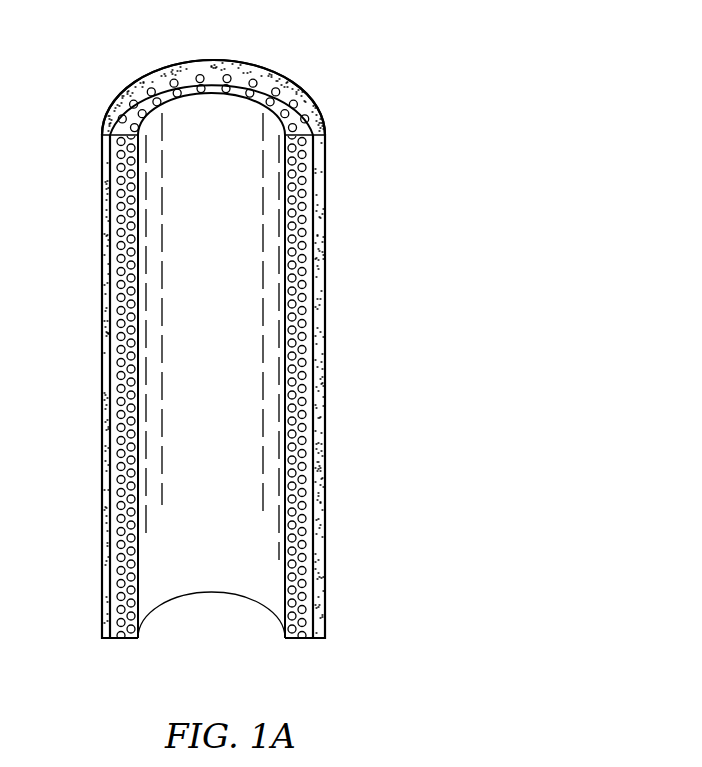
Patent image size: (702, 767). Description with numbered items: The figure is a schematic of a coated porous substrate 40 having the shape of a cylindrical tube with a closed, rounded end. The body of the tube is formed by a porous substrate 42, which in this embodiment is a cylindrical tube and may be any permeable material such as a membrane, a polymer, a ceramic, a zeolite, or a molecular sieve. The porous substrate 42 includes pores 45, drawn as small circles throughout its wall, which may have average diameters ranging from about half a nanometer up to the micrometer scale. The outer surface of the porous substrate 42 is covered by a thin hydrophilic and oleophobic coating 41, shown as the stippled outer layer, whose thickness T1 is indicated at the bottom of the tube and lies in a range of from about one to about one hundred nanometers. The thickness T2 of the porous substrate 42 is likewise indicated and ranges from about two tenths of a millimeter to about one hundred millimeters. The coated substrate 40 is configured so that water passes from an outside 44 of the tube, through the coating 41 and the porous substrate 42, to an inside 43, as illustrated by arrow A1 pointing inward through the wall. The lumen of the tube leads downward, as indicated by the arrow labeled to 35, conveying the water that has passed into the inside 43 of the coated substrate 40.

The coated porous substrate 40 is at (236, 328).
The hydrophilic and oleophobic coating 41 is at (326, 370).
The porous substrate 42 is at (132, 552).
The inside 43 is at (203, 115).
The outside 44 is at (376, 285).
The pores 45 is at (303, 463).
The arrow A1 is at (170, 296).
The connection to element 35 is at (213, 605).
The thickness of the hydrophilic and oleophobic coating T1 is at (123, 656).
The thickness of the porous substrate T2 is at (240, 656).